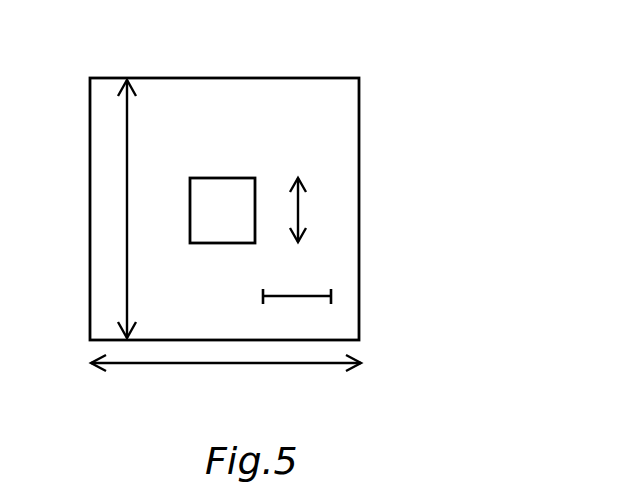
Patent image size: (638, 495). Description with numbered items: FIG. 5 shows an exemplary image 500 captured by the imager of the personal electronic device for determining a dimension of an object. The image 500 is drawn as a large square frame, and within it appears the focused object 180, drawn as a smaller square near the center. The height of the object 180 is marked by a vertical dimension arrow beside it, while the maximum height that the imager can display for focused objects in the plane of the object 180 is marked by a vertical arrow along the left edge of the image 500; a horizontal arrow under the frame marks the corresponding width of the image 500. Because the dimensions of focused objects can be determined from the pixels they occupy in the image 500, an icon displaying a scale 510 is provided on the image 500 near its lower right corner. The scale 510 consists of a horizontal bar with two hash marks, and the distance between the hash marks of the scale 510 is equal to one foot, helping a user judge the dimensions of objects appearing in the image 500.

The image 500 is at (333, 50).
The object 180 is at (221, 177).
The scale 510 is at (318, 292).